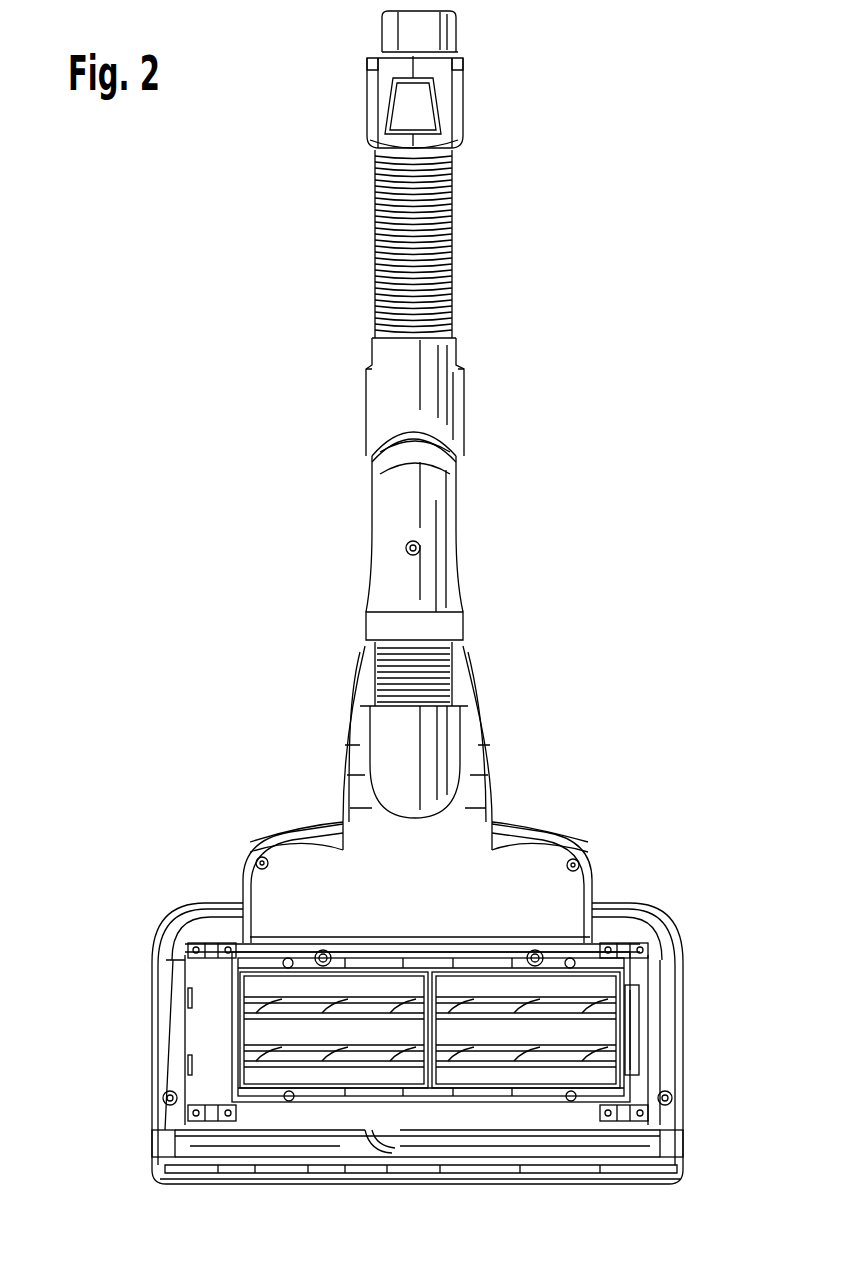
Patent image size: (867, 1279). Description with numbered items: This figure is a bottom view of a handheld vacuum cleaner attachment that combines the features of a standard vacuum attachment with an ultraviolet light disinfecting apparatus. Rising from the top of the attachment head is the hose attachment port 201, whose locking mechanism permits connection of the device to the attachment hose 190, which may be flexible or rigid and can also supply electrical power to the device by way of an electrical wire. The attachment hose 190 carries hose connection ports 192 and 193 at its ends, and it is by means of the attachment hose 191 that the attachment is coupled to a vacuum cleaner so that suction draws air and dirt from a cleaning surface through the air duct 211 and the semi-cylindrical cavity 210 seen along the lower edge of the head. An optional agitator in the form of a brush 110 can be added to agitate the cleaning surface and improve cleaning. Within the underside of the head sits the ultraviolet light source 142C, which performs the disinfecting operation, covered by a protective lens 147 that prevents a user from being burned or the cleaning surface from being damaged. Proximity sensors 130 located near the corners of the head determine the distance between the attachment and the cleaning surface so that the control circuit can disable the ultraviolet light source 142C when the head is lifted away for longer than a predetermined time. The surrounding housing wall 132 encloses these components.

The brush 110 is at (580, 1185).
The proximity sensor 130 is at (205, 948).
The housing wall 132 is at (273, 895).
The ultraviolet light source 142C is at (300, 1018).
The protective lens 147 is at (265, 985).
The attachment hose 190 is at (300, 192).
The attachment hose 191 is at (377, 290).
The hose connection port 192 is at (392, 392).
The hose connection port 193 is at (378, 28).
The hose attachment port 201 is at (452, 525).
The semi-cylindrical cavity 210 is at (280, 1145).
The air duct 211 is at (385, 1140).